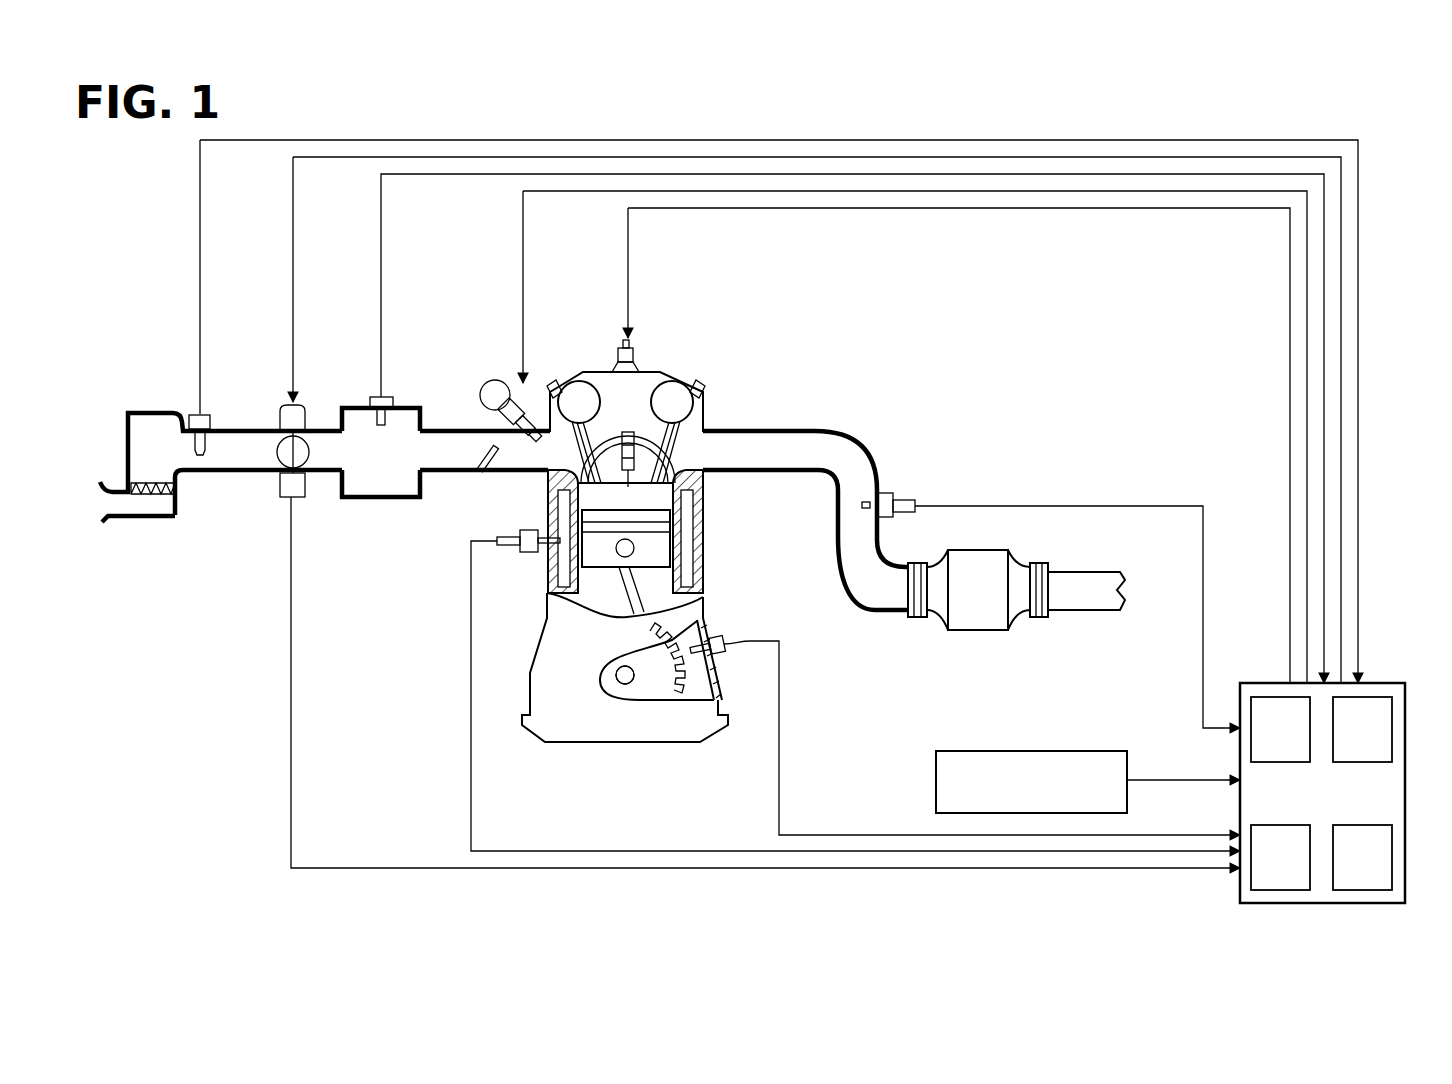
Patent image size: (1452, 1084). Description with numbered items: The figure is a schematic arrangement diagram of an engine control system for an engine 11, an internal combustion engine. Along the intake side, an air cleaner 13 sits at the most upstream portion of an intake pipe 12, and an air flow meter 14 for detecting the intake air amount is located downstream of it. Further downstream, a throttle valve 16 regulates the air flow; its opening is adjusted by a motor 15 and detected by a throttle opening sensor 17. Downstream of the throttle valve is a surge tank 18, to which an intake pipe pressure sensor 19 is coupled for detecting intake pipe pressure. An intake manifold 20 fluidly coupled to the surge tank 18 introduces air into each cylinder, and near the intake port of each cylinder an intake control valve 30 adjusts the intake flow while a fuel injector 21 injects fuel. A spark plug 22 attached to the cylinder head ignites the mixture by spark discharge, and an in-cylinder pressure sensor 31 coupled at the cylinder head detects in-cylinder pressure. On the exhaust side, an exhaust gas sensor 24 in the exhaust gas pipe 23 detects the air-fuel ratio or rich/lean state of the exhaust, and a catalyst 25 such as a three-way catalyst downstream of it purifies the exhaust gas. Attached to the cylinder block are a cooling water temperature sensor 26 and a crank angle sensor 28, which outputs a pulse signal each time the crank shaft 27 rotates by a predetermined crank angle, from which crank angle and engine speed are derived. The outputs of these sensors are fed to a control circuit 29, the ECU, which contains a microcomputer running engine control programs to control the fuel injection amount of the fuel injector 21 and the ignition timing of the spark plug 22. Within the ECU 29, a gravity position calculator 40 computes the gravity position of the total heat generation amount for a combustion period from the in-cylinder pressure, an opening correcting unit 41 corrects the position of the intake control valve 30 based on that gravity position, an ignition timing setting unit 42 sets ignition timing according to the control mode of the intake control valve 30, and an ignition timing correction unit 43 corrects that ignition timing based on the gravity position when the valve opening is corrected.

The engine 11 is at (690, 362).
The intake pipe 12 is at (242, 429).
The air cleaner 13 is at (148, 494).
The air flow meter 14 is at (194, 413).
The motor 15 is at (283, 405).
The throttle valve 16 is at (281, 456).
The throttle opening sensor 17 is at (301, 498).
The surge tank 18 is at (381, 498).
The intake pipe pressure sensor 19 is at (386, 397).
The intake manifold 20 is at (455, 430).
The fuel injector 21 is at (481, 389).
The spark plug 22 is at (646, 420).
The exhaust gas pipe 23 is at (815, 431).
The exhaust gas sensor 24 is at (886, 493).
The catalyst 25 is at (985, 550).
The cooling water temperature sensor 26 is at (527, 553).
The crank shaft 27 is at (625, 685).
The crank angle sensor 28 is at (724, 640).
The control circuit (ECU) 29 is at (1240, 887).
The intake control valve 30 is at (478, 456).
The in-cylinder pressure sensor 31 is at (935, 773).
The gravity position calculator 40 is at (1273, 697).
The opening correcting unit 41 is at (1368, 697).
The ignition timing setting unit 42 is at (1283, 890).
The ignition timing correction unit 43 is at (1362, 890).